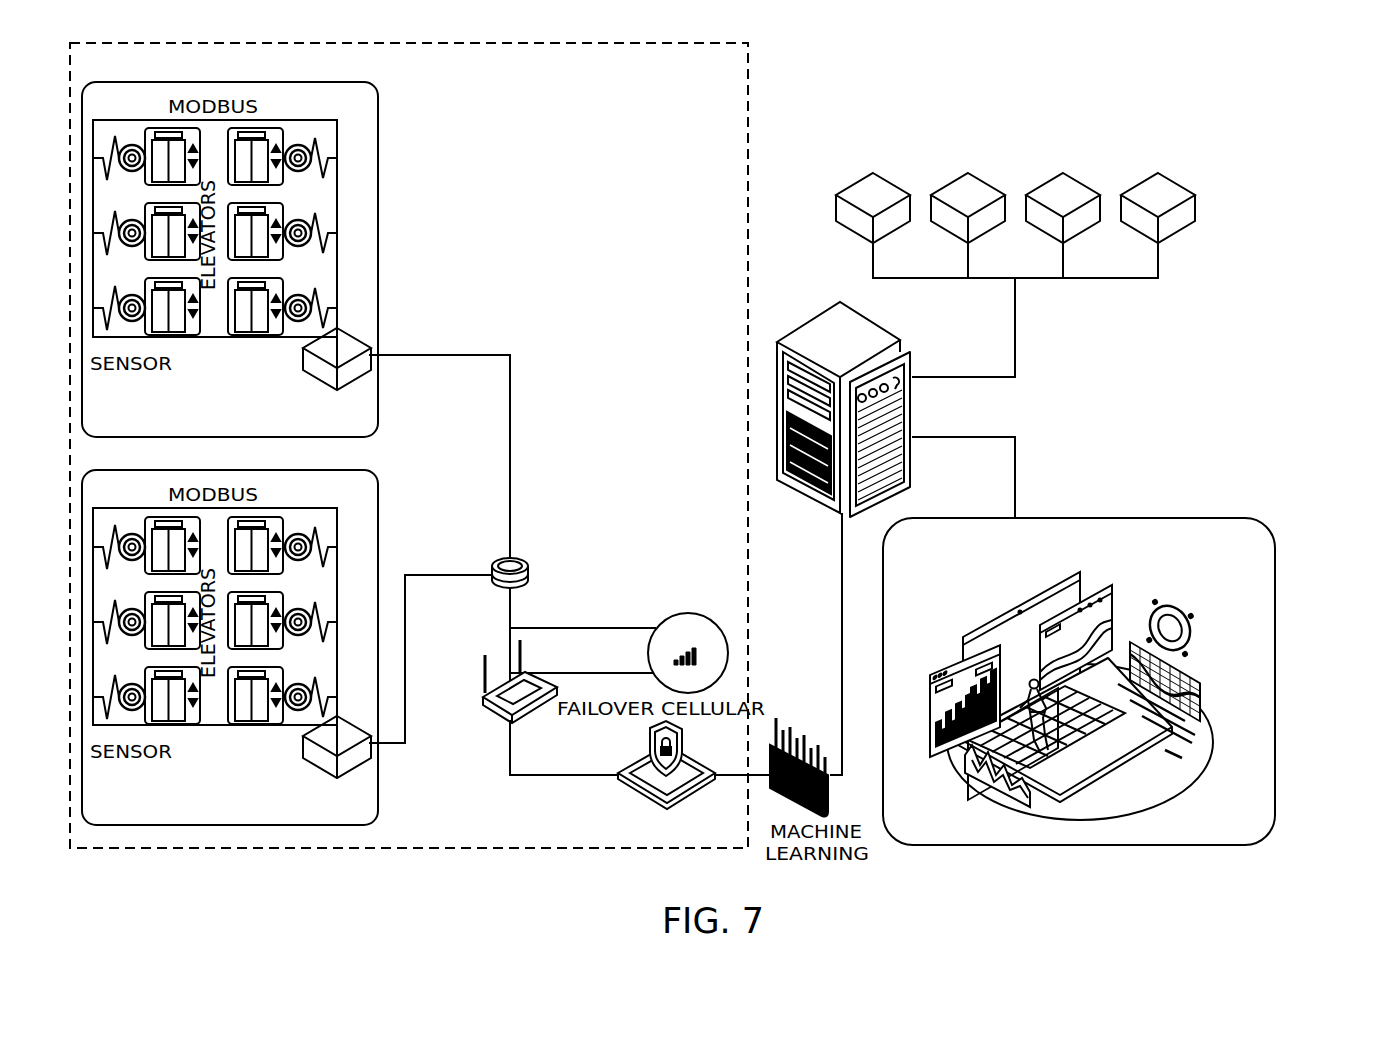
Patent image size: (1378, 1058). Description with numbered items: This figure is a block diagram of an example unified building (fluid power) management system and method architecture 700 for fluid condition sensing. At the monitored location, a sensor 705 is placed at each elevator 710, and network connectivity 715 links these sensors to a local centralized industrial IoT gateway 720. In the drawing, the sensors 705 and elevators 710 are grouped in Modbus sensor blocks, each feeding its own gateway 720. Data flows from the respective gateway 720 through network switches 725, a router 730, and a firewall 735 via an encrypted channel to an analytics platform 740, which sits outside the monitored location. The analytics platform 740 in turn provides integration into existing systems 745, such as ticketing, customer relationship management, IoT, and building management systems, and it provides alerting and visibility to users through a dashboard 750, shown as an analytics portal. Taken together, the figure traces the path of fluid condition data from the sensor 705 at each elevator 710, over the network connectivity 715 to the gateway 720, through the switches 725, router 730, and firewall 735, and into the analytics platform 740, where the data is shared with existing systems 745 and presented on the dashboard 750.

The unified building management system and method architecture 700 is at (803, 95).
The sensor 705 is at (306, 140).
The elevator 710 is at (271, 126).
The network connectivity 715 is at (329, 182).
The centralized industrial IoT gateway 720 is at (355, 333).
The network switches 725 is at (519, 556).
The router 730 is at (504, 720).
The firewall 735 is at (637, 794).
The analytics platform 740 is at (892, 322).
The existing systems 745 is at (1083, 115).
The dashboard 750 is at (1281, 702).